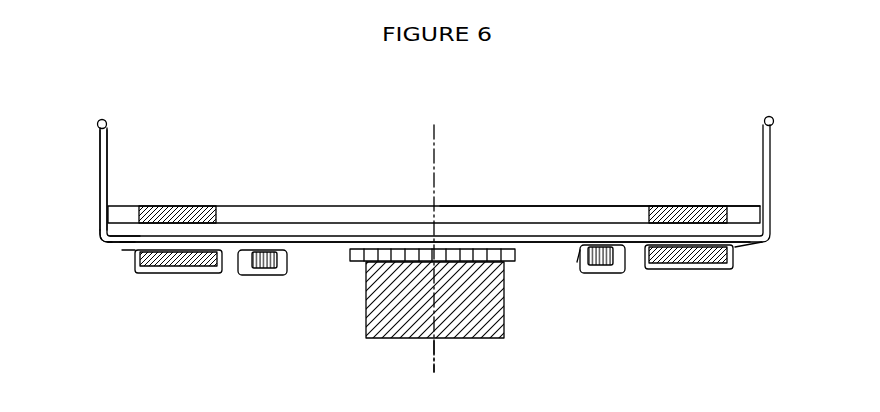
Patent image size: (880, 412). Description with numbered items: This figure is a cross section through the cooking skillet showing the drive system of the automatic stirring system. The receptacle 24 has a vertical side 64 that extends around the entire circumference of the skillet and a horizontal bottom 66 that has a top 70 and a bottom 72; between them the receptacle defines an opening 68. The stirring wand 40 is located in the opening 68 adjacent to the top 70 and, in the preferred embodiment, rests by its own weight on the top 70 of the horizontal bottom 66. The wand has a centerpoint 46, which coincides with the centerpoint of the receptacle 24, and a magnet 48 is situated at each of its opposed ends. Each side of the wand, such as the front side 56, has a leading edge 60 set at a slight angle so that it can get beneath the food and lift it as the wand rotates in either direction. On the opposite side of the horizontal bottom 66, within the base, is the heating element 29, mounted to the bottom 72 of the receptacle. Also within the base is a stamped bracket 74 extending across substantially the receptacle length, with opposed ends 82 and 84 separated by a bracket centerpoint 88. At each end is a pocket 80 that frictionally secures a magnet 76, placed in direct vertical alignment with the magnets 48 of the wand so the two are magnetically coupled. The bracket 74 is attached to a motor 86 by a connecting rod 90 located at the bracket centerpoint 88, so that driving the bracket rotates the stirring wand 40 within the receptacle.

The receptacle 24 is at (773, 134).
The heating element 29 is at (263, 266).
The stirring wand 40 is at (316, 194).
The centerpoint 46 is at (446, 167).
The magnet 48 is at (191, 206).
The front side 56 is at (751, 212).
The leading edge 60 is at (771, 232).
The vertical side 64 is at (89, 150).
The horizontal bottom 66 is at (102, 242).
The opening 68 is at (570, 191).
The top 70 is at (128, 225).
The bottom 72 is at (113, 252).
The stamped bracket 74 is at (577, 262).
The magnet 76 is at (157, 274).
The pocket 80 is at (712, 266).
The end 82 is at (121, 274).
The end 84 is at (751, 256).
The motor 86 is at (366, 298).
The bracket centerpoint 88 is at (435, 376).
The connecting rod 90 is at (437, 237).